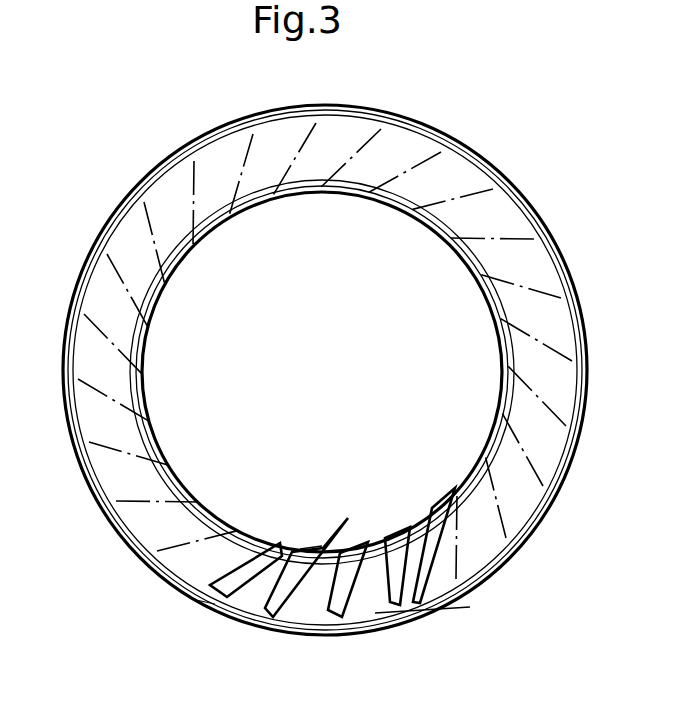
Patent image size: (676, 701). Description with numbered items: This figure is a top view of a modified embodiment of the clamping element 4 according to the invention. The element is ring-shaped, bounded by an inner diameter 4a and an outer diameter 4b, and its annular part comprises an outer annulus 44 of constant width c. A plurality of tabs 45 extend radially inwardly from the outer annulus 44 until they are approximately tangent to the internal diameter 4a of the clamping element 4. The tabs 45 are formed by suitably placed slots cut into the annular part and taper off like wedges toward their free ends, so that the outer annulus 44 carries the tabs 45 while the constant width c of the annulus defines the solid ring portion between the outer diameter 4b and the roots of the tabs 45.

The guide ring 4 is at (484, 107).
The inner wall of guide ring 4a is at (385, 208).
The outer wall of guide ring 4b is at (413, 121).
The outer annulus 44 is at (212, 596).
The tabs 45 is at (350, 553).
The width c is at (443, 560).